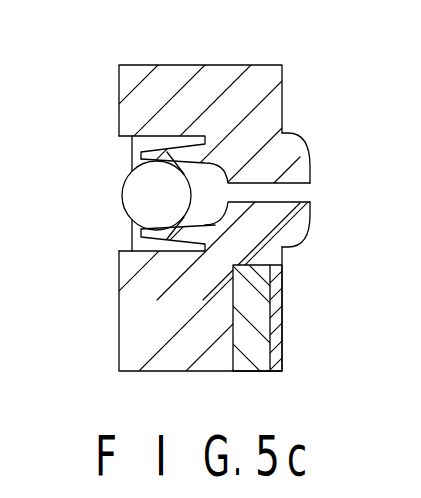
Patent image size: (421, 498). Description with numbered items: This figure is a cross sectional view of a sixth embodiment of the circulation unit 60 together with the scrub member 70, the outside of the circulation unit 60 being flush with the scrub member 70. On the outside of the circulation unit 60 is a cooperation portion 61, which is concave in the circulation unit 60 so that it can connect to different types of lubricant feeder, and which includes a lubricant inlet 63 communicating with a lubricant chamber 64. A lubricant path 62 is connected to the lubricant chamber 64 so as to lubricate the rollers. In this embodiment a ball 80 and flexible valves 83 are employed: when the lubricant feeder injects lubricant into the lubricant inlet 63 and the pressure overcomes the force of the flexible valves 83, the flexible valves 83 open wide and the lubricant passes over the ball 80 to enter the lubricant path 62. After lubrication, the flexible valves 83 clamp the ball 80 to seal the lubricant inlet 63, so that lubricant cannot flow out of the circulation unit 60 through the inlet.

The circulation unit 60 is at (170, 65).
The cooperation portion 61 is at (298, 142).
The lubricant path 62 is at (130, 156).
The lubricant inlet 63 is at (303, 189).
The lubricant chamber 64 is at (147, 244).
The scrub member 70 is at (283, 298).
The ball 80 is at (155, 203).
The flexible valves 83 is at (190, 234).